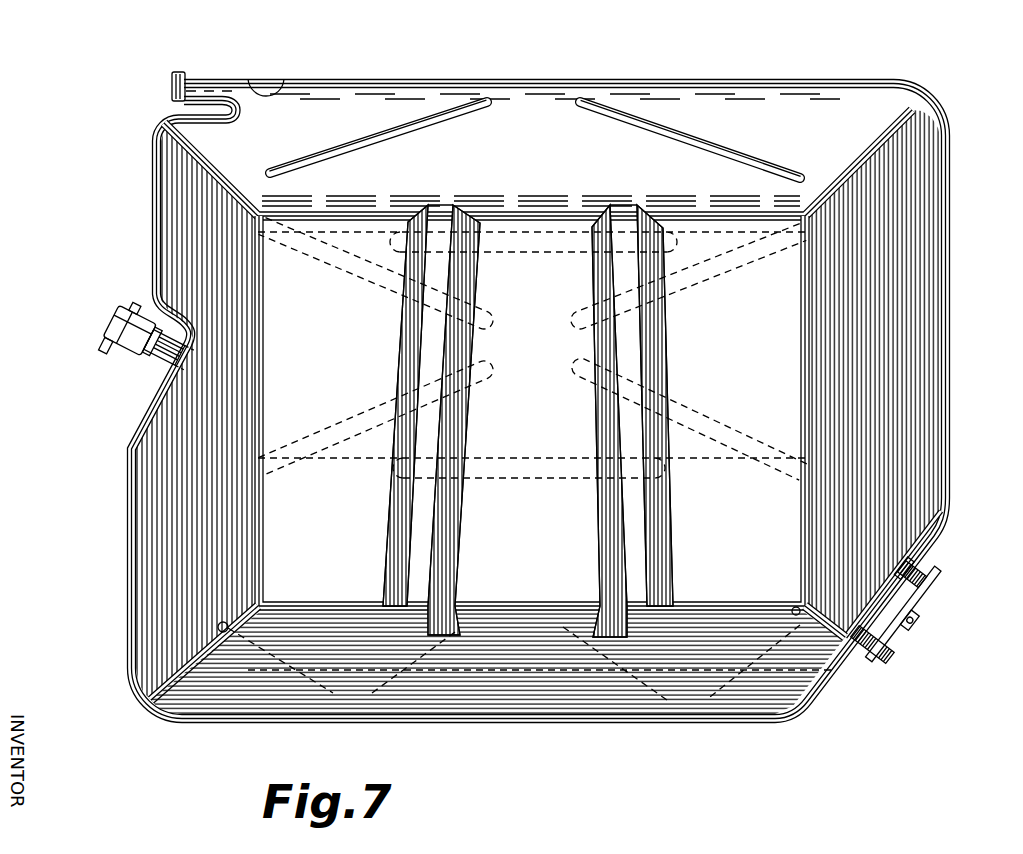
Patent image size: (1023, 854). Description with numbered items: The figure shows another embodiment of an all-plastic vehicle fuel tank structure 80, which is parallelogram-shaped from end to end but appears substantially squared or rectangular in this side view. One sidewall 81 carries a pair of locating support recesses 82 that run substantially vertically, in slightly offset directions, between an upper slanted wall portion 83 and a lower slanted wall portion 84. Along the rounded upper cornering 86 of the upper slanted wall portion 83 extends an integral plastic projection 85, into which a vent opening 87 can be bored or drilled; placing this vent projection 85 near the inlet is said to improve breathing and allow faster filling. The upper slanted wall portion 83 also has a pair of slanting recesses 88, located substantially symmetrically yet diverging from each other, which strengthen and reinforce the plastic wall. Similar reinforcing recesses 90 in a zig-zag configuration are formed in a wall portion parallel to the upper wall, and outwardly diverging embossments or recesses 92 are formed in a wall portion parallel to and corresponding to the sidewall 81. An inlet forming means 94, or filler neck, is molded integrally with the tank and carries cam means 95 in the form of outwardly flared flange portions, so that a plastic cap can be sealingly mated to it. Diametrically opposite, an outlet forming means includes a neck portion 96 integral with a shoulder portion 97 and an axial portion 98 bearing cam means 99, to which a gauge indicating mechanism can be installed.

The plastic fuel tank structure 80 is at (952, 397).
The sidewall 81 is at (523, 277).
The locating support recesses 82 is at (417, 533).
The upper slanted wall portion 83 is at (530, 98).
The lower slanted wall portion 84 is at (534, 660).
The integral plastic projection 85 is at (210, 78).
The rounded upper cornering 86 is at (282, 82).
The vent opening 87 is at (199, 85).
The slanting recesses 88 is at (367, 141).
The reinforcing recesses 90 is at (372, 696).
The outwardly diverging embossments or recesses 92 is at (379, 405).
The inlet forming means 94 is at (124, 350).
The cam means 95 is at (136, 306).
The neck portion 96 is at (906, 578).
The shoulder portion 97 is at (902, 608).
The axial portion 98 is at (906, 627).
The cam means 99 is at (938, 569).